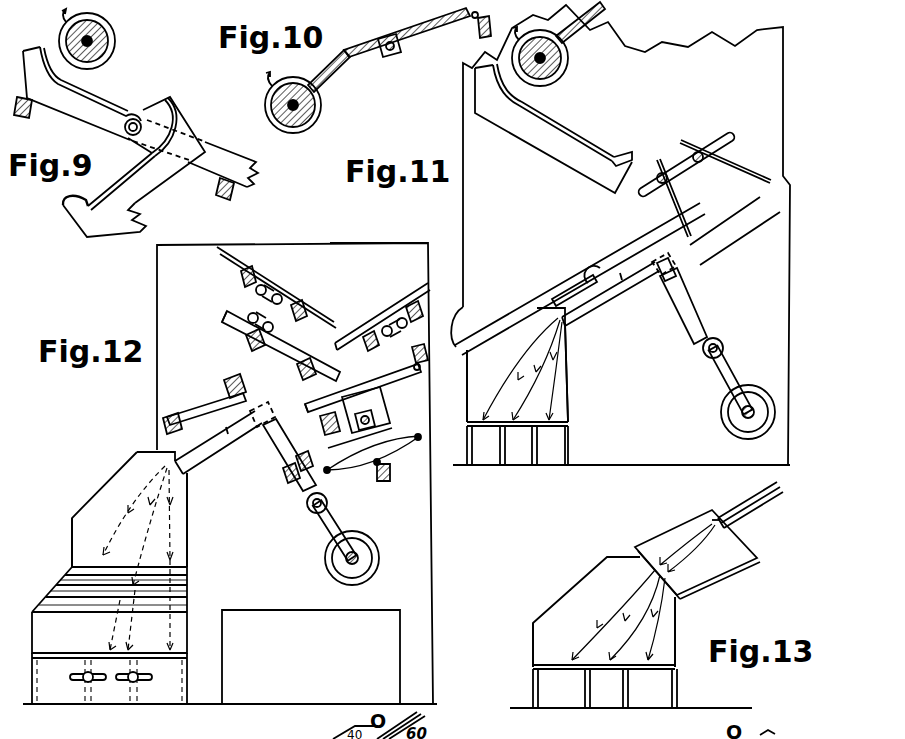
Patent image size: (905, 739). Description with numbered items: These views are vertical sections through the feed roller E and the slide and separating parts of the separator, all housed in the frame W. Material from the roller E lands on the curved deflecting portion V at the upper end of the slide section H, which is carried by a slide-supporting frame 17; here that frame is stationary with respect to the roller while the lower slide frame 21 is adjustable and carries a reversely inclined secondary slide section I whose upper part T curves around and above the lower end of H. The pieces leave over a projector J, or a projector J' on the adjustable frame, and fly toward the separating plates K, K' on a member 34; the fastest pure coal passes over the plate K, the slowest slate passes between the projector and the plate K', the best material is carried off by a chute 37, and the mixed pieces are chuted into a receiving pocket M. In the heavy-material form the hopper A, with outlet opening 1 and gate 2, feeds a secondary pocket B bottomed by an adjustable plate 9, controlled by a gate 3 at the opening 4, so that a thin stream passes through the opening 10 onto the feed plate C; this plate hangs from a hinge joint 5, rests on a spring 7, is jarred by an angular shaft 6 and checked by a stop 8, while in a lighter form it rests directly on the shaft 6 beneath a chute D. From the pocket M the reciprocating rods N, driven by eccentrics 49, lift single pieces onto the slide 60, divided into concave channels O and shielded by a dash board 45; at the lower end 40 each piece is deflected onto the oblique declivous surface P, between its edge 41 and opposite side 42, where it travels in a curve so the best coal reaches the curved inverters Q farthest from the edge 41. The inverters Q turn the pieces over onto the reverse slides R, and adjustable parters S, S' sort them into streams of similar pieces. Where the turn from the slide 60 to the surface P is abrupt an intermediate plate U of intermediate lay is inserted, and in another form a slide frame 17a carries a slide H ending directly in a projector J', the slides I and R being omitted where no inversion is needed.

In FIG. 9, the roller E is at (95, 39).
In FIG. 10, the roller E is at (300, 102).
In FIG. 11, the roller E is at (548, 56).
In FIG. 9, the curved deflecting portion V is at (40, 55).
In FIG. 11, the curved deflecting portion V is at (492, 75).
In FIG. 9, the slide section H is at (90, 84).
In FIG. 11, the slide section H is at (553, 112).
In FIG. 9, the curved upper part of slide section I T is at (165, 144).
In FIG. 9, the slide-supporting frame 17 is at (136, 125).
In FIG. 11, the supporting bar 17a is at (553, 130).
In FIG. 9, the slide frame 21 is at (109, 204).
In FIG. 9, the secondary slide section I is at (121, 181).
In FIG. 9, the projector J is at (75, 193).
In FIG. 11, the projector J' is at (622, 149).
In FIG. 10, the feed plate C is at (407, 32).
In FIG. 12, the feed plate C is at (363, 385).
In FIG. 10, the link D is at (331, 71).
In FIG. 11, the link D is at (581, 22).
In FIG. 10, the hinge joint 5 is at (477, 25).
In FIG. 12, the hinge joint 5 is at (415, 357).
In FIG. 10, the angular shaft 6 is at (394, 48).
In FIG. 12, the angular shaft 6 is at (366, 410).
In FIG. 11, the frame or housing W is at (620, 235).
In FIG. 12, the frame or housing W is at (230, 473).
In FIG. 11, the rod 34 is at (725, 157).
In FIG. 11, the separating plate K is at (694, 165).
In FIG. 11, the separating plate K' is at (680, 198).
In FIG. 11, the chute 37 is at (617, 276).
In FIG. 11, the shield or dash board 45 is at (576, 279).
In FIG. 12, the shield or dash board 45 is at (204, 408).
In FIG. 11, the concave channel O is at (622, 267).
In FIG. 12, the concave channel O is at (228, 420).
In FIG. 13, the concave channel O is at (750, 503).
In FIG. 11, the slide 60 is at (610, 294).
In FIG. 12, the slide 60 is at (218, 442).
In FIG. 11, the receiving pocket M is at (669, 259).
In FIG. 12, the receiving pocket M is at (270, 410).
In FIG. 11, the reciprocating rods N is at (704, 336).
In FIG. 12, the reciprocating rods N is at (307, 490).
In FIG. 11, the eccentrics 49 is at (737, 412).
In FIG. 12, the eccentrics 49 is at (361, 558).
In FIG. 11, the lower end of slide 40 is at (551, 317).
In FIG. 12, the lower end of slide 40 is at (156, 460).
In FIG. 13, the lower end of slide 40 is at (713, 522).
In FIG. 11, the declivous surface P is at (517, 370).
In FIG. 12, the declivous surface P is at (129, 518).
In FIG. 13, the declivous surface P is at (631, 632).
In FIG. 11, the edge 41 is at (576, 372).
In FIG. 12, the edge 41 is at (195, 520).
In FIG. 13, the edge 41 is at (685, 632).
In FIG. 11, the chute left wall 42 is at (457, 386).
In FIG. 12, the chute left wall 42 is at (63, 542).
In FIG. 13, the chute left wall 42 is at (523, 645).
In FIG. 11, the parter or partition S is at (517, 458).
In FIG. 12, the parter or partition S is at (109, 691).
In FIG. 13, the parter or partition S is at (605, 699).
In FIG. 11, the parter or partition S' is at (491, 460).
In FIG. 12, the parter or partition S' is at (88, 695).
In FIG. 13, the parter or partition S' is at (568, 701).
In FIG. 12, the receiving and storing pocket or hopper A is at (379, 264).
In FIG. 12, the outlet opening 1 is at (279, 292).
In FIG. 12, the gate 2 is at (278, 291).
In FIG. 12, the secondary pocket B is at (266, 331).
In FIG. 12, the adjustable plate 9 is at (281, 346).
In FIG. 12, the gate or valve 3 is at (382, 322).
In FIG. 12, the outlet opening 4 is at (331, 356).
In FIG. 12, the outlet opening 10 is at (326, 395).
In FIG. 12, the stop 8 is at (352, 431).
In FIG. 12, the spring 7 is at (372, 457).
In FIG. 12, the curved inverter Q is at (119, 605).
In FIG. 12, the reverse slide R is at (118, 632).
In FIG. 13, the intermediate plate U is at (697, 554).